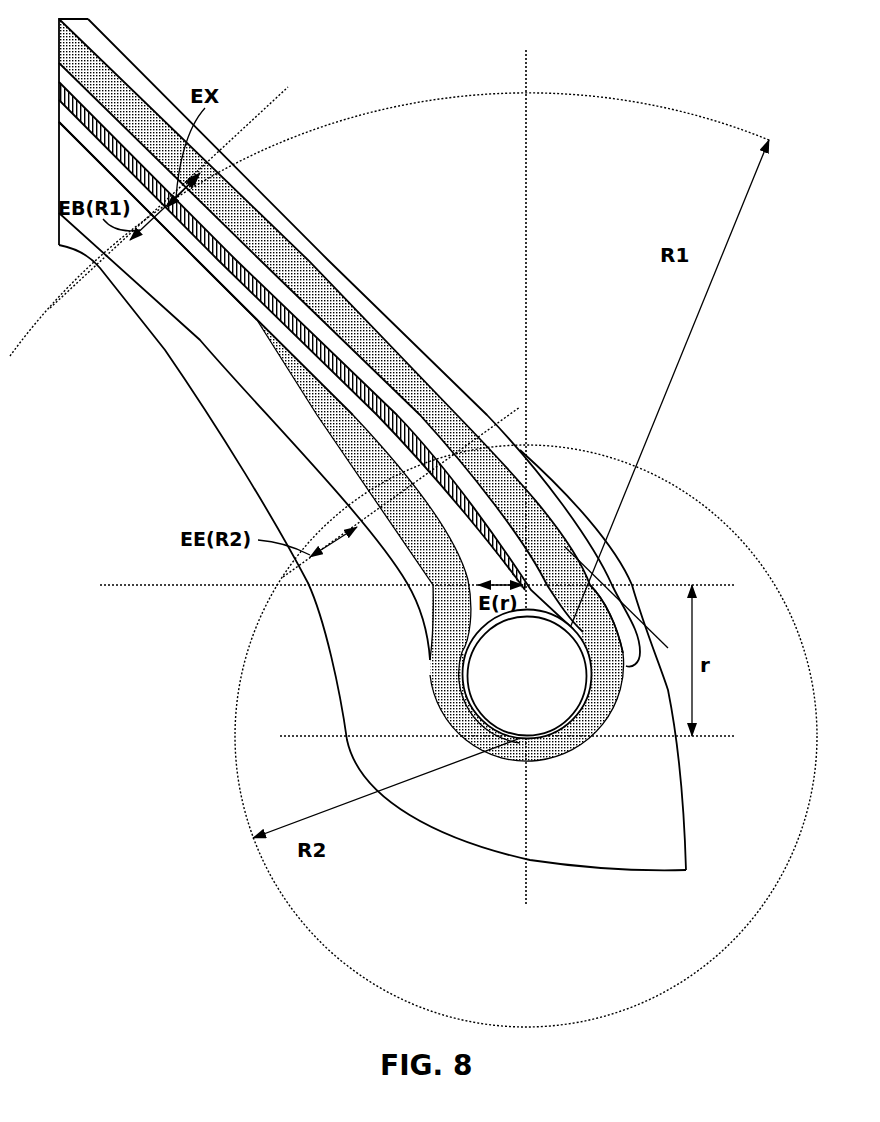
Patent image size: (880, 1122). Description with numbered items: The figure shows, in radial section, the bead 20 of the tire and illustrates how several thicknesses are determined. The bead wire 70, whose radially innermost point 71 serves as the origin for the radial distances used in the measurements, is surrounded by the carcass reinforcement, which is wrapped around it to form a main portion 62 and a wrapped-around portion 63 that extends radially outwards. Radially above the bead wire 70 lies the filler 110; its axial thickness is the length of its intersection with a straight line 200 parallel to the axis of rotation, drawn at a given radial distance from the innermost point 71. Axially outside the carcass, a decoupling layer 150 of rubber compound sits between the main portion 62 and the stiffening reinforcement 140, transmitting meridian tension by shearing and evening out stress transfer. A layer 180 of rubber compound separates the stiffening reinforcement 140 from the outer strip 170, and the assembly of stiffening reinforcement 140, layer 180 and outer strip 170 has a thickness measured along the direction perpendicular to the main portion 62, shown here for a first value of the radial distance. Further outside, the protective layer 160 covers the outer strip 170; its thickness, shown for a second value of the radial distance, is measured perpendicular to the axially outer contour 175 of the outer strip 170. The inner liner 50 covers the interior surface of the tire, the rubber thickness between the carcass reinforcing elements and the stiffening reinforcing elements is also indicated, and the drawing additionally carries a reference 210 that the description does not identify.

The bead 20 is at (213, 493).
The inner liner 50 is at (140, 80).
The main portion of the carcass reinforcement 62 is at (407, 370).
The wrapped-around portion of the carcass reinforcement 63 is at (318, 352).
The bead wire 70 is at (512, 686).
The radially innermost point of the bead wire 71 is at (530, 741).
The filler 110 is at (478, 620).
The stiffening reinforcement 140 is at (317, 322).
The decoupling layer 150 is at (295, 368).
The protective layer 160 is at (317, 502).
The outer strip 170 is at (246, 337).
The axially outer contour of the outer strip 175 is at (215, 362).
The layer of rubber compound 180 is at (233, 292).
The straight line parallel to the axis of rotation 200 is at (195, 590).
The reference line 210 is at (507, 413).